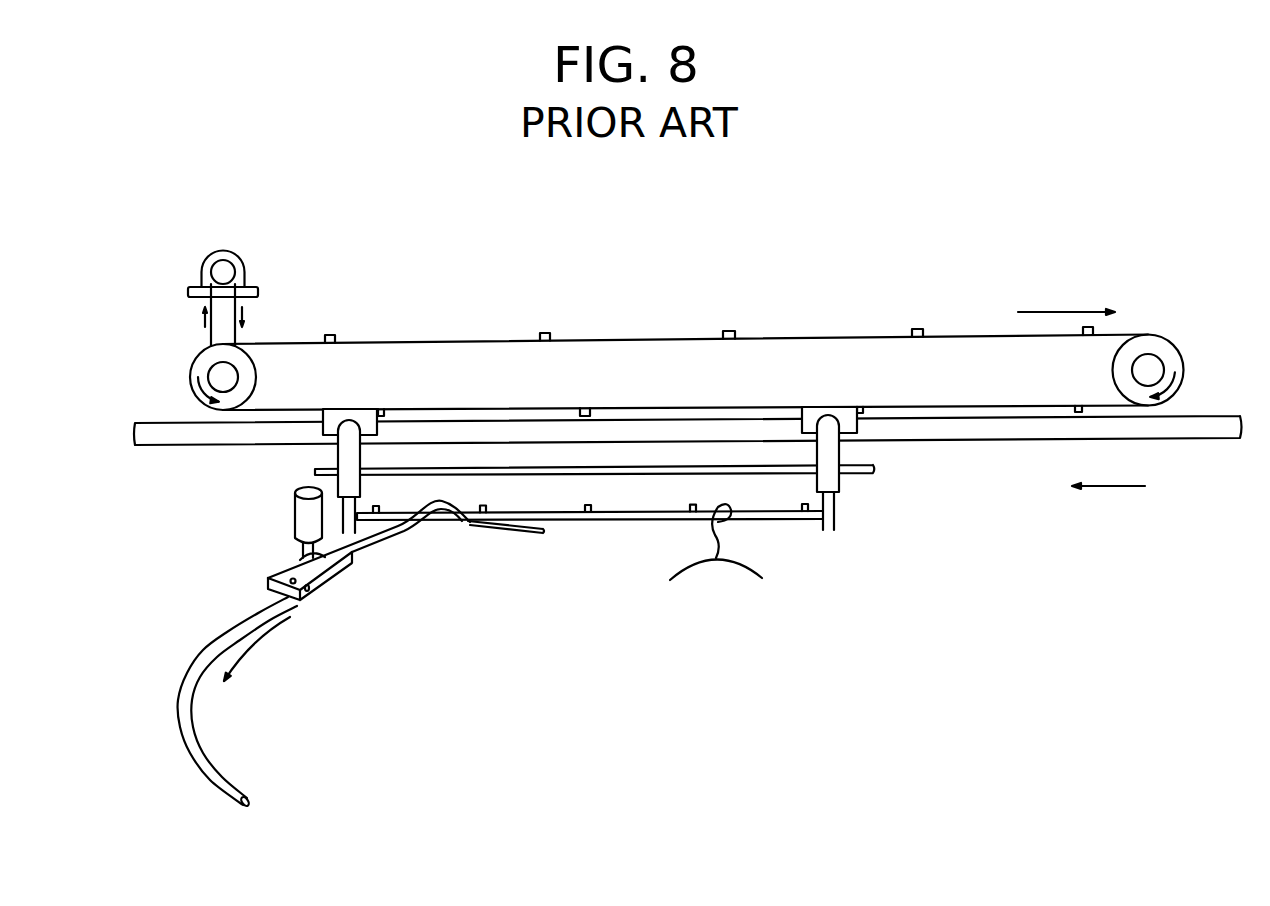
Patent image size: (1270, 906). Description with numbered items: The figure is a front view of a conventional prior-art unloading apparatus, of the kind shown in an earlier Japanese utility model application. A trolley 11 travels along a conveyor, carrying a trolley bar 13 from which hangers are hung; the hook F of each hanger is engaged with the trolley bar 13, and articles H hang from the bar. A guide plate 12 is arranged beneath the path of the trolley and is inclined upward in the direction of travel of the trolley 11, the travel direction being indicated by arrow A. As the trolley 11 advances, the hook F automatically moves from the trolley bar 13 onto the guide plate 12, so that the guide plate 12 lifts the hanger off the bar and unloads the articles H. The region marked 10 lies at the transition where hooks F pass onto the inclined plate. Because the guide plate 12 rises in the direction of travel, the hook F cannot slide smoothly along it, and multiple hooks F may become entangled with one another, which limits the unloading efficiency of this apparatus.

The guide arm with hump 10 is at (406, 531).
The trolley 11 is at (787, 528).
The guide plate 12 is at (535, 530).
The trolley bar 13 is at (602, 523).
The hook F is at (713, 545).
The articles H is at (683, 577).
The conveying direction A is at (1123, 487).